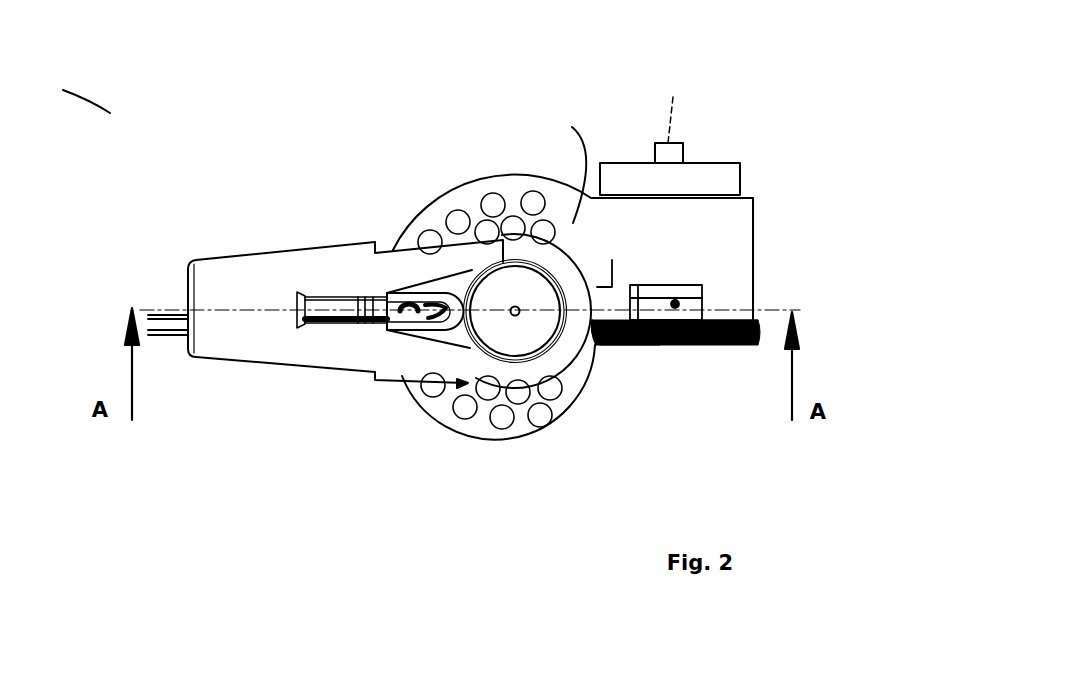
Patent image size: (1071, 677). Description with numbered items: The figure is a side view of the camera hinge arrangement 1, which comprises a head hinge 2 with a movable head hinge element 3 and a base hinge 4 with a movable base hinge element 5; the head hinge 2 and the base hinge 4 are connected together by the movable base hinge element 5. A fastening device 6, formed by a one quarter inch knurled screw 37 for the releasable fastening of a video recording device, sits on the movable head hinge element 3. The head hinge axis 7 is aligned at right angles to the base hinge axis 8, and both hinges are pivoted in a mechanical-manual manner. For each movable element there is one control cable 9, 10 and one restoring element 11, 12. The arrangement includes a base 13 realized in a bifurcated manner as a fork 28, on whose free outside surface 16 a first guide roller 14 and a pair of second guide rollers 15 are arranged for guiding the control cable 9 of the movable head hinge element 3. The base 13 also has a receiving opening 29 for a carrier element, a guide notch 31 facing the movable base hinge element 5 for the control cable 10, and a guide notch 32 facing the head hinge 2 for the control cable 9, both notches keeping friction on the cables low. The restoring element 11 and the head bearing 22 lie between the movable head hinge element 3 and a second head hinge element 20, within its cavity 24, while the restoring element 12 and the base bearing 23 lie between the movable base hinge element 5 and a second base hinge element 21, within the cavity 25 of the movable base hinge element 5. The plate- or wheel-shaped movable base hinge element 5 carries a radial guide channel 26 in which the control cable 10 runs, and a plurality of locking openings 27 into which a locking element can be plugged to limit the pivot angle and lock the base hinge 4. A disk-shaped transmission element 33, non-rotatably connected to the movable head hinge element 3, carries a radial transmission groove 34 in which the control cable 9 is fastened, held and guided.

The camera hinge arrangement 1 is at (110, 113).
The head hinge 2 is at (753, 195).
The movable head hinge element 3 is at (718, 163).
The base hinge 4 is at (473, 291).
The movable base hinge element 5 is at (575, 163).
The fastening device 6 is at (683, 145).
The head hinge axis 7 is at (673, 97).
The base hinge axis 8 is at (518, 314).
The control cable 9 is at (338, 308).
The control cable 10 is at (446, 185).
The restoring element 11 is at (724, 246).
The restoring element 12 is at (455, 340).
The base 13 is at (280, 350).
The first guide roller 14 is at (412, 208).
The pair of second guide rollers 15 is at (478, 168).
The free outside surface 16 is at (356, 232).
The second head hinge element 20 is at (737, 277).
The second base hinge element 21 is at (487, 348).
The head bearing 22 is at (723, 283).
The base bearing 23 is at (508, 357).
The cavity 24 is at (748, 193).
The cavity 25 is at (516, 358).
The radial guide channel 26 is at (495, 178).
The locking openings 27 is at (533, 200).
The fork 28 is at (382, 348).
The receiving opening 29 is at (187, 297).
The guide notch 31 is at (342, 250).
The guide notch 32 is at (603, 358).
The transmission element 33 is at (673, 347).
The transmission groove 34 is at (718, 345).
The knurled screw 37 is at (633, 347).